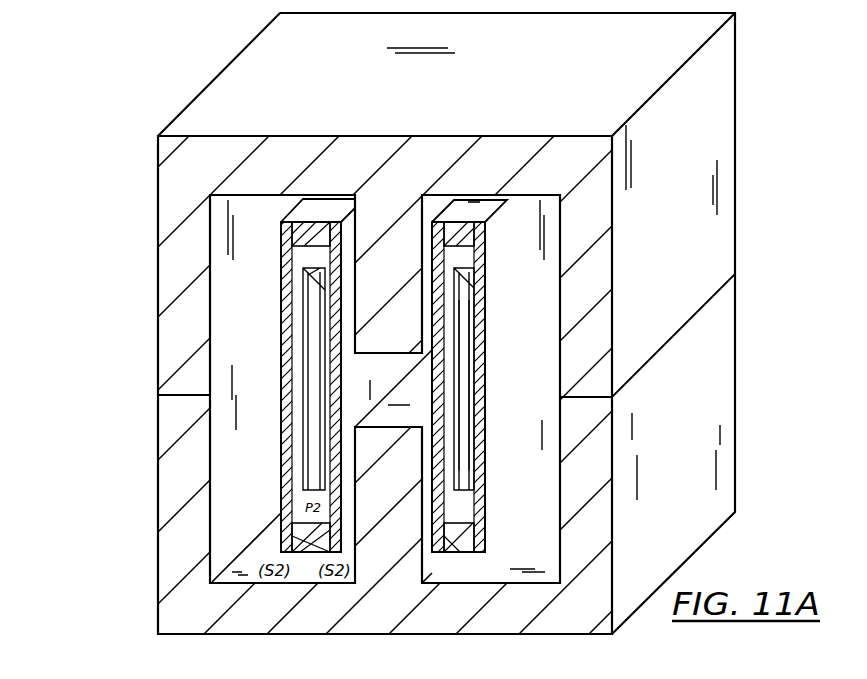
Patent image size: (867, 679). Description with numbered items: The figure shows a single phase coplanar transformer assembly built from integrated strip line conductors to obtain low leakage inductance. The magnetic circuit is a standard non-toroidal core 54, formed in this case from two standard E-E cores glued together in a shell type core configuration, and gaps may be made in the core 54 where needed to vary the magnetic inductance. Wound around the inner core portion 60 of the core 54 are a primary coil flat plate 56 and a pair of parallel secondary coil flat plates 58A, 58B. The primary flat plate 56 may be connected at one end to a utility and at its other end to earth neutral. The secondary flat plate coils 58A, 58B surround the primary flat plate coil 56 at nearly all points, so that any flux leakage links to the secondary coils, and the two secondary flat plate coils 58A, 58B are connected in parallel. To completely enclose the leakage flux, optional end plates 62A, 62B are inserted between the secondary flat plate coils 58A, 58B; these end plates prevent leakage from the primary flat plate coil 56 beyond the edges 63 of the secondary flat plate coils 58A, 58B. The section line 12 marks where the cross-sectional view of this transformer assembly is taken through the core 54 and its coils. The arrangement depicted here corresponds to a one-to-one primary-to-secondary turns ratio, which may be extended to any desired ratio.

The section line 12- 12 is at (128, 207).
The core 54 is at (560, 155).
The primary coil flat plate 56 is at (455, 305).
The secondary coil flat plate 58A is at (447, 338).
The secondary coil flat plate 58B is at (428, 370).
The inner core portion 60 is at (384, 212).
The end plate 62A is at (283, 243).
The end plate 62B is at (305, 552).
The edges of the secondary flat plate coils 63 is at (490, 226).